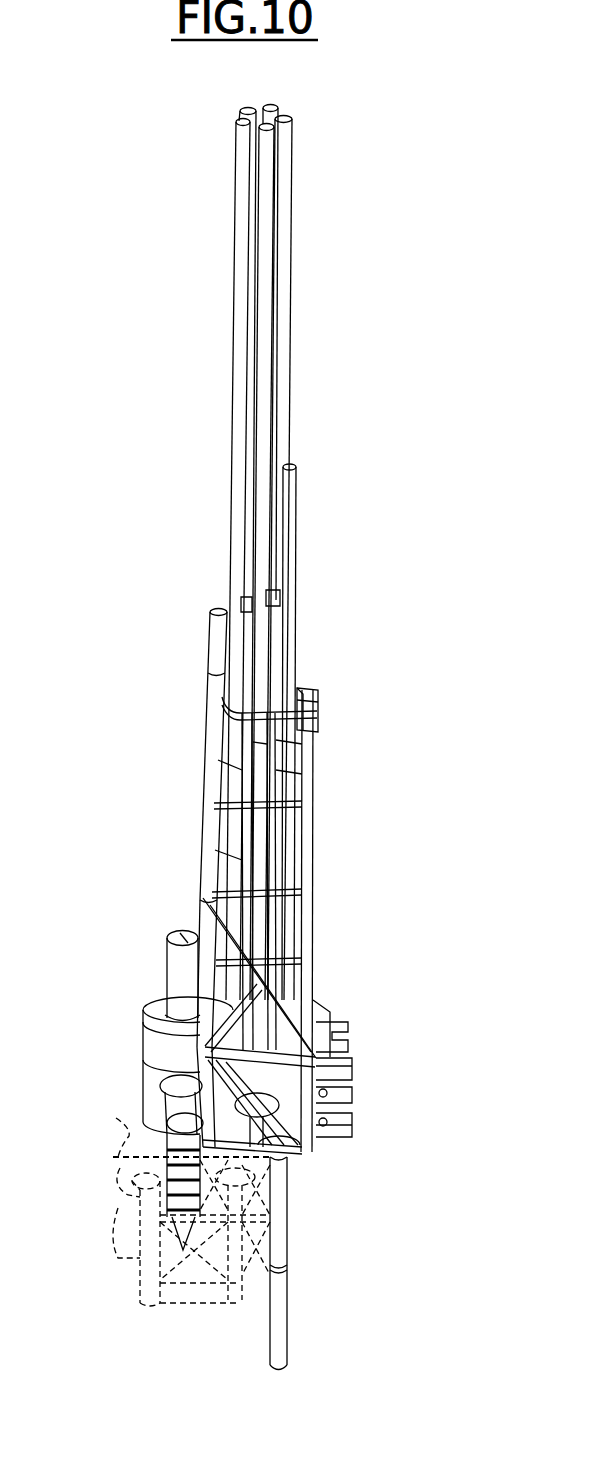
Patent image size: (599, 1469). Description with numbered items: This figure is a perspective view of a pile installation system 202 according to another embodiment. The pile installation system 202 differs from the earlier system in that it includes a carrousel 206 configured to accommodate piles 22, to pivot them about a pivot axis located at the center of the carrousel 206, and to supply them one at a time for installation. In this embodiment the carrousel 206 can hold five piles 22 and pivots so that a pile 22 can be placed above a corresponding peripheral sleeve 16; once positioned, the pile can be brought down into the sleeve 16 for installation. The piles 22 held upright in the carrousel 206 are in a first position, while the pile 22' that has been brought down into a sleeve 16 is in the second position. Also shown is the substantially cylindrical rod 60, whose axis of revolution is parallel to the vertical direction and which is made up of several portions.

The pile 22 is at (300, 553).
The pile in second position 22' is at (278, 917).
The carrousel 206 is at (330, 983).
The pile installation system 202 is at (350, 1067).
The rod 60 is at (178, 972).
The peripheral sleeve 16 is at (290, 1192).